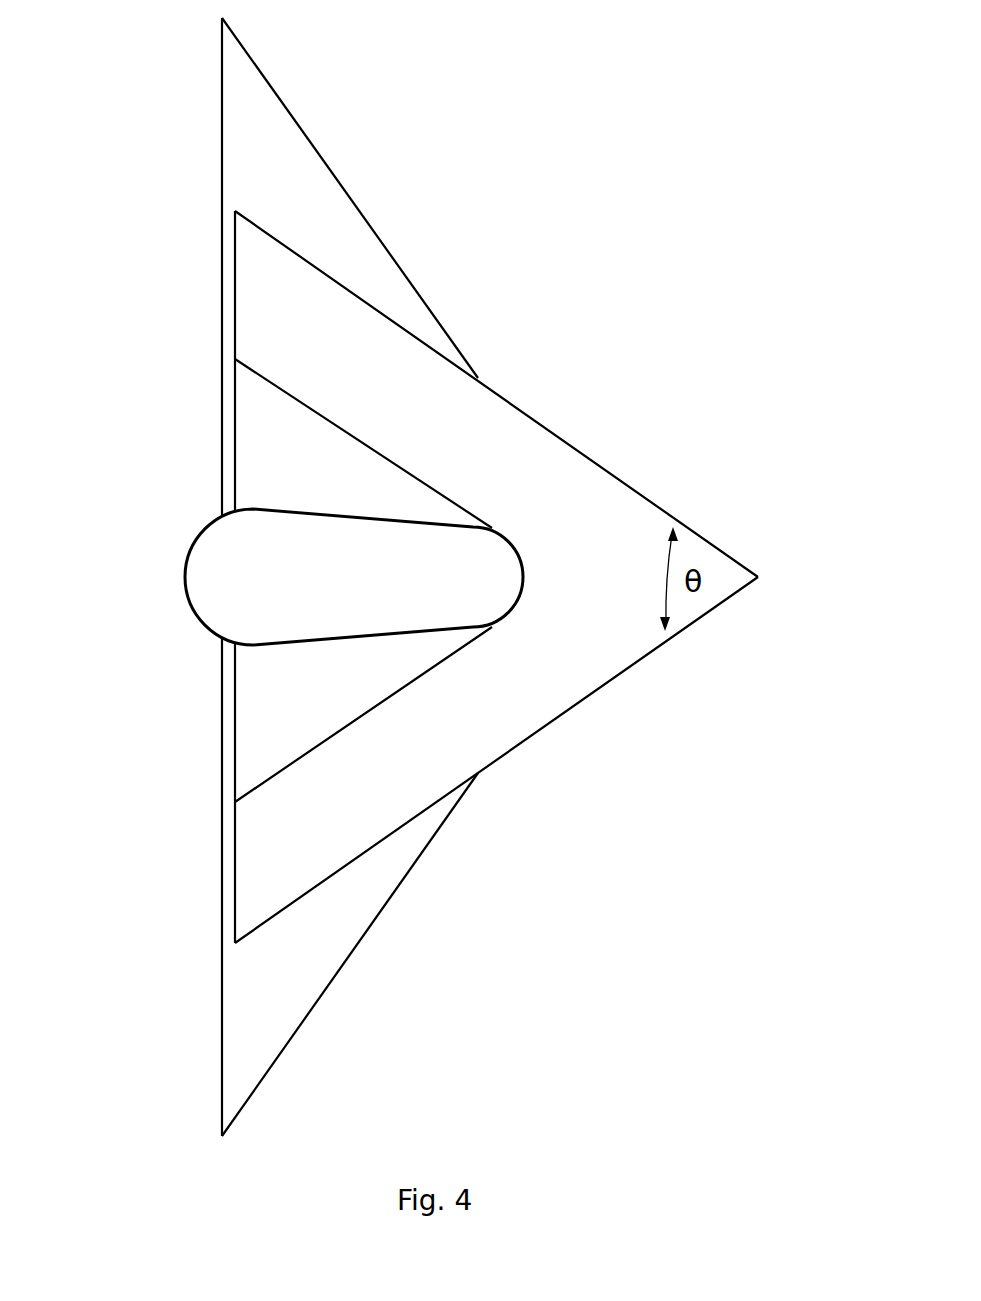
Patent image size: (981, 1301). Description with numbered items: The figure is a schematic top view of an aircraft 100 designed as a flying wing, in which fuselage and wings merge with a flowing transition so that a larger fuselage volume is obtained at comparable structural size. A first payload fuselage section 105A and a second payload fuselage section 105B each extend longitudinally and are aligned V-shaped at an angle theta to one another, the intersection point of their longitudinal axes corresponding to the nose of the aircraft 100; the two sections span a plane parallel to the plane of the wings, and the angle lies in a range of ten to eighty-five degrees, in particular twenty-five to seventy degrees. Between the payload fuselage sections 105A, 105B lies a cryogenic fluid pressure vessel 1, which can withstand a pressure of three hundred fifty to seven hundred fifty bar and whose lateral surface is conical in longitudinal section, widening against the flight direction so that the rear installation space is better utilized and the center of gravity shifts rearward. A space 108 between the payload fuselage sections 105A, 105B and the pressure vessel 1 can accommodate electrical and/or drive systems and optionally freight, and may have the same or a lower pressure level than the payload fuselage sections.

The aircraft 100 is at (648, 156).
The first payload fuselage section 105A is at (490, 433).
The second payload fuselage section 105B is at (505, 707).
The space 108 is at (277, 452).
The cryogenic fluid pressure vessel 1 is at (228, 590).